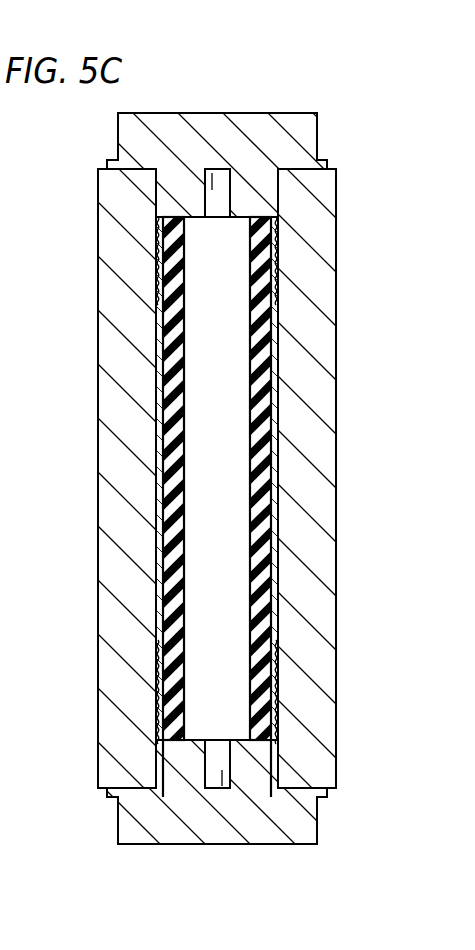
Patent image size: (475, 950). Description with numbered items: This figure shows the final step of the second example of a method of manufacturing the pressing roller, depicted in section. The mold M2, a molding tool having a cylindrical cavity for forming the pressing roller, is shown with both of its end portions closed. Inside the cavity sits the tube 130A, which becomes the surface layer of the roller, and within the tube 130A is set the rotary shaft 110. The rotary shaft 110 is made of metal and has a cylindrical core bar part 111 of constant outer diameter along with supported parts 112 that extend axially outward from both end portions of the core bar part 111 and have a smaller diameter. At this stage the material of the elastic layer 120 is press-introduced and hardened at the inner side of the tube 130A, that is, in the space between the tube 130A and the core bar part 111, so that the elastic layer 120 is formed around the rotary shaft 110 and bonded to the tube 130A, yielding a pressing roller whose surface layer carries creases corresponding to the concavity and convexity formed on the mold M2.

The mold M2 is at (343, 194).
The rotary shaft 110 is at (199, 483).
The core bar part 111 is at (232, 312).
The supported parts 112 is at (222, 197).
The elastic layer 120 is at (262, 368).
The tube 130A is at (273, 451).